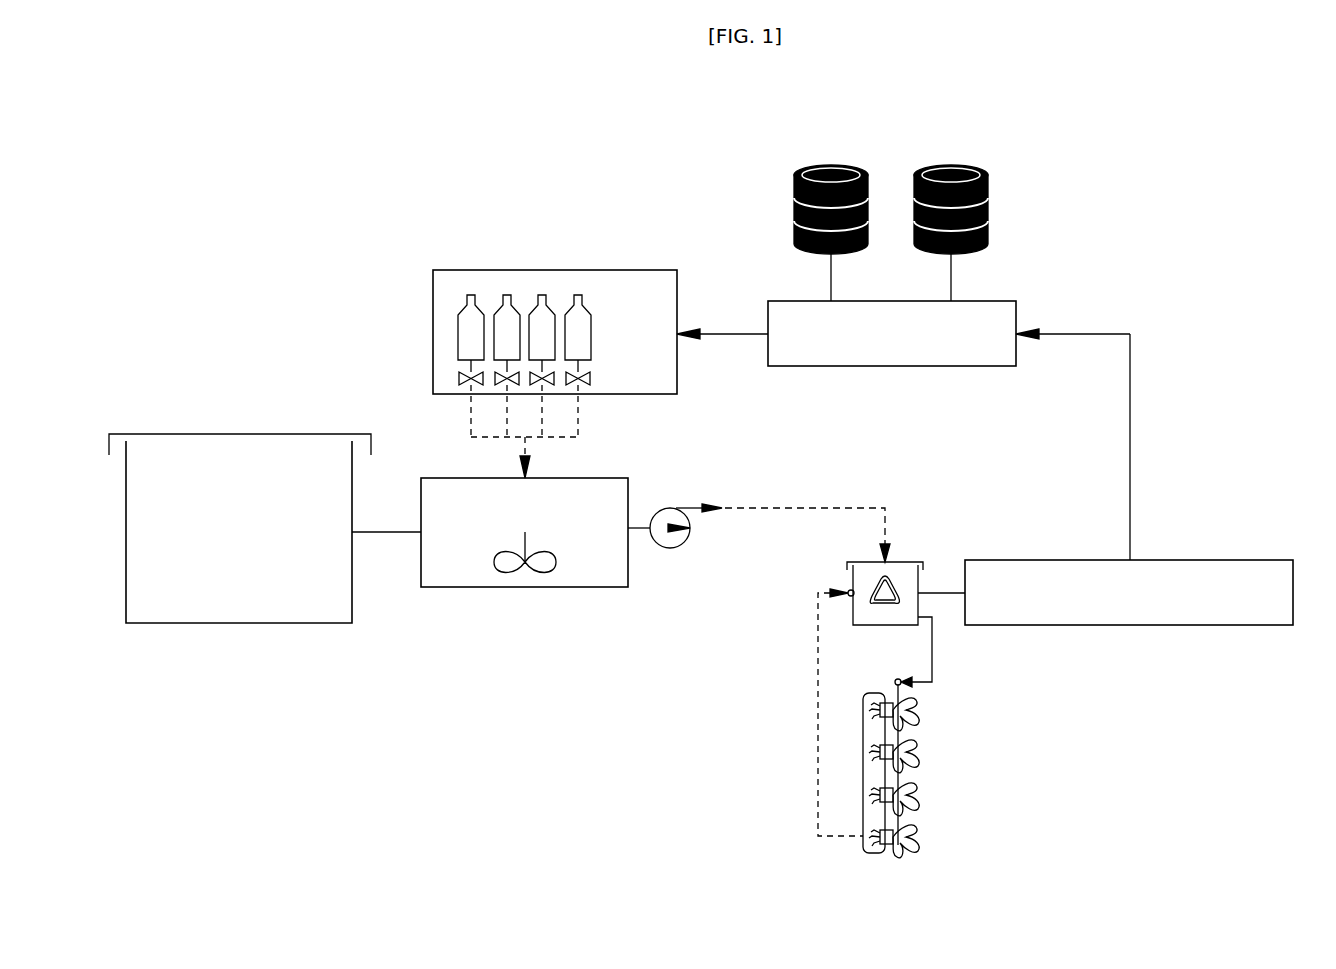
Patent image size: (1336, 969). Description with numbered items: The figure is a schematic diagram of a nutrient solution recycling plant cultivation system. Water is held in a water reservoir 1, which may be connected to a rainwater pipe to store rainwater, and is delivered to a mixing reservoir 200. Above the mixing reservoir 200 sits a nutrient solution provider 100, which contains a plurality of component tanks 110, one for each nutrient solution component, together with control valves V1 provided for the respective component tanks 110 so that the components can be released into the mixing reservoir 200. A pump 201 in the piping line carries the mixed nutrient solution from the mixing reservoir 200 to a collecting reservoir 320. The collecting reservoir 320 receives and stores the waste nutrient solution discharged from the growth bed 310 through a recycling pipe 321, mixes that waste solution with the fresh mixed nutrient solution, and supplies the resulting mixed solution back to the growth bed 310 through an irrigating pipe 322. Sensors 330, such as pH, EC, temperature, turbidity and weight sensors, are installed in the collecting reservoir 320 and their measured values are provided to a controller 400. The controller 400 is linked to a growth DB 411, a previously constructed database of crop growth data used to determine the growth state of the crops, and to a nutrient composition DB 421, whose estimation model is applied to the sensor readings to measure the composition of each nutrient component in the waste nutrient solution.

The water reservoir 1 is at (238, 623).
The nutrient solution provider 100 is at (555, 270).
The component tanks 110 is at (470, 292).
The control valves V1 is at (497, 384).
The mixing reservoir 200 is at (523, 587).
The pump 201 is at (670, 548).
The controller 400 is at (1005, 301).
The growth DB 411 is at (831, 165).
The nutrient composition DB 421 is at (951, 165).
The sensors 330 is at (1243, 560).
The collecting reservoir 320 is at (853, 577).
The recycling pipe 321 is at (818, 795).
The irrigating pipe 322 is at (932, 650).
The growth bed 310 is at (918, 843).